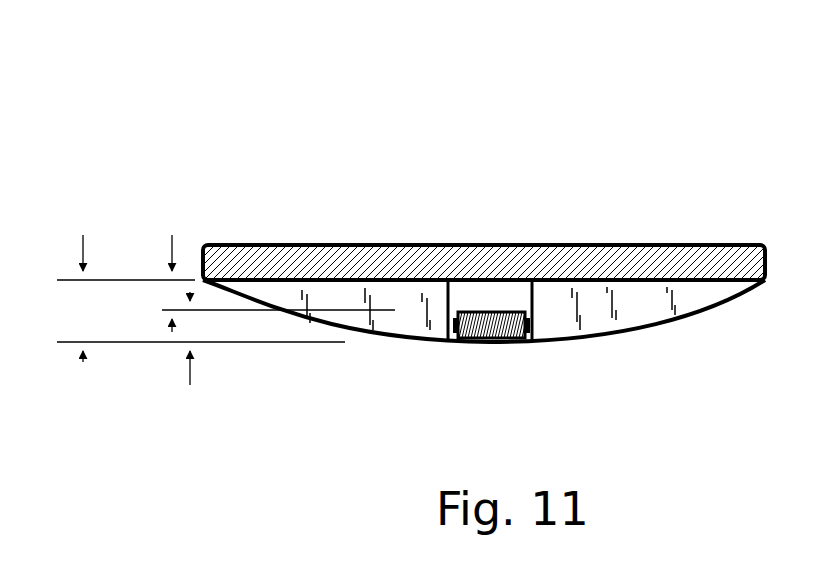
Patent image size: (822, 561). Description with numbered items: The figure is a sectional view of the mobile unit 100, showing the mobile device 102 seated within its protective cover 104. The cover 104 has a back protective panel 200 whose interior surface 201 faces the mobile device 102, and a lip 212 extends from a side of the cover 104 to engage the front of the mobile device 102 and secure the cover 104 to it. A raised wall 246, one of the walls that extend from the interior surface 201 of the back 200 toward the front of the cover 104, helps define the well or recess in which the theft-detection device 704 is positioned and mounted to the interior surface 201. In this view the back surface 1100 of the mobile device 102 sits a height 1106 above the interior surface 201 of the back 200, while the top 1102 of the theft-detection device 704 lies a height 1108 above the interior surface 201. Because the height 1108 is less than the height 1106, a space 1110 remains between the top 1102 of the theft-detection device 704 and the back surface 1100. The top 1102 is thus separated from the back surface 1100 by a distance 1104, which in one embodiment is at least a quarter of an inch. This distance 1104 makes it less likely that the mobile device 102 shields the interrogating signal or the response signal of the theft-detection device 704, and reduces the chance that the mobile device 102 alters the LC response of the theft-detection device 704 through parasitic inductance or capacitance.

The mobile unit 100 is at (685, 135).
The mobile device 102 is at (703, 262).
The cover 104 is at (617, 350).
The back protective panel 200 is at (388, 346).
The interior surface 201 is at (548, 323).
The lip 212 is at (532, 292).
The raised wall 246 is at (447, 297).
The theft-detection device 704 is at (489, 352).
The back surface 1100 is at (637, 292).
The top 1102 is at (489, 304).
The distance 1104 is at (172, 240).
The height 1106 is at (83, 240).
The height 1108 is at (190, 377).
The space 1110 is at (513, 290).